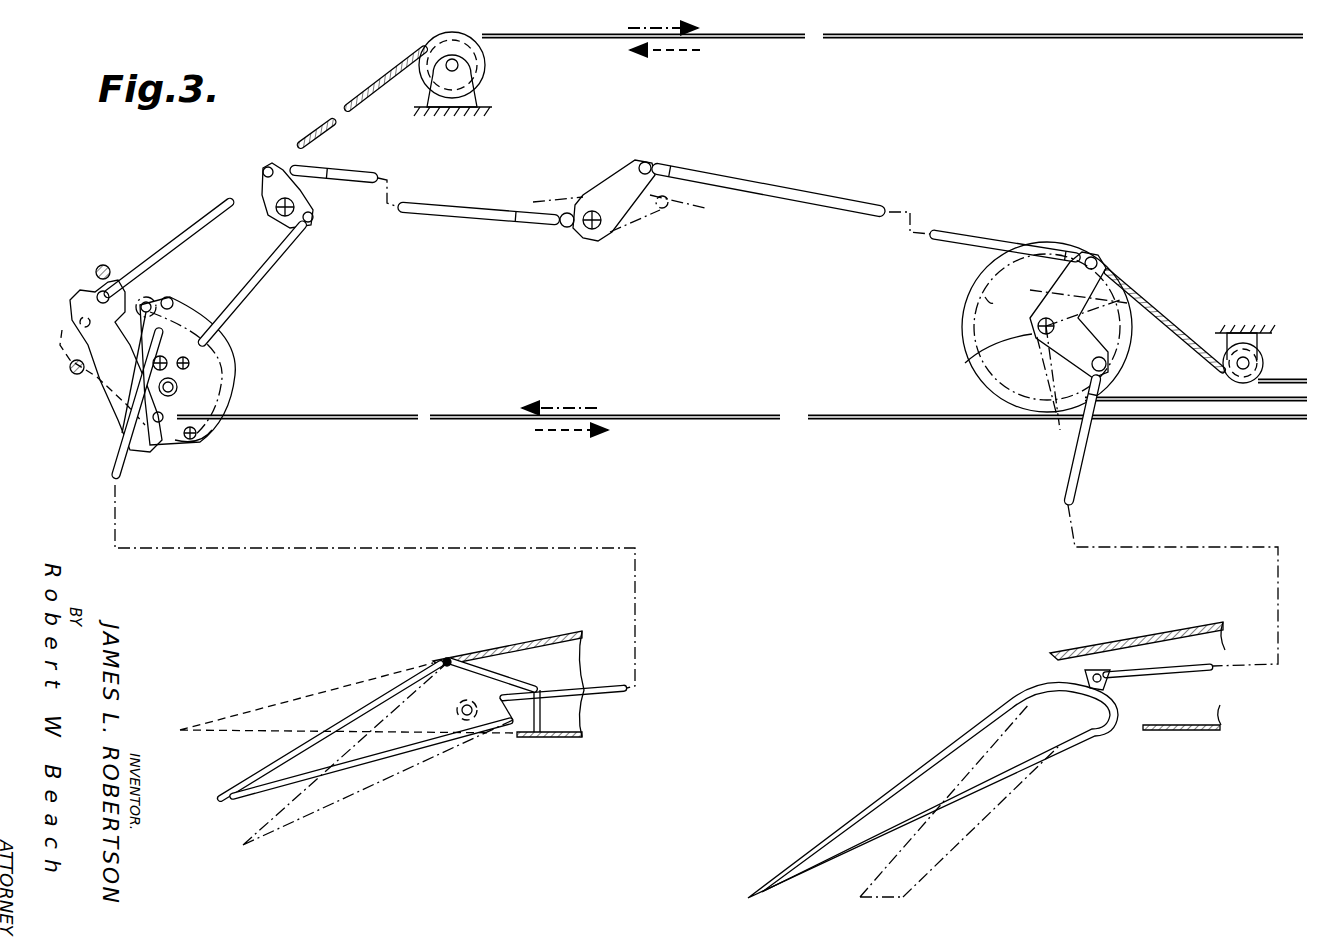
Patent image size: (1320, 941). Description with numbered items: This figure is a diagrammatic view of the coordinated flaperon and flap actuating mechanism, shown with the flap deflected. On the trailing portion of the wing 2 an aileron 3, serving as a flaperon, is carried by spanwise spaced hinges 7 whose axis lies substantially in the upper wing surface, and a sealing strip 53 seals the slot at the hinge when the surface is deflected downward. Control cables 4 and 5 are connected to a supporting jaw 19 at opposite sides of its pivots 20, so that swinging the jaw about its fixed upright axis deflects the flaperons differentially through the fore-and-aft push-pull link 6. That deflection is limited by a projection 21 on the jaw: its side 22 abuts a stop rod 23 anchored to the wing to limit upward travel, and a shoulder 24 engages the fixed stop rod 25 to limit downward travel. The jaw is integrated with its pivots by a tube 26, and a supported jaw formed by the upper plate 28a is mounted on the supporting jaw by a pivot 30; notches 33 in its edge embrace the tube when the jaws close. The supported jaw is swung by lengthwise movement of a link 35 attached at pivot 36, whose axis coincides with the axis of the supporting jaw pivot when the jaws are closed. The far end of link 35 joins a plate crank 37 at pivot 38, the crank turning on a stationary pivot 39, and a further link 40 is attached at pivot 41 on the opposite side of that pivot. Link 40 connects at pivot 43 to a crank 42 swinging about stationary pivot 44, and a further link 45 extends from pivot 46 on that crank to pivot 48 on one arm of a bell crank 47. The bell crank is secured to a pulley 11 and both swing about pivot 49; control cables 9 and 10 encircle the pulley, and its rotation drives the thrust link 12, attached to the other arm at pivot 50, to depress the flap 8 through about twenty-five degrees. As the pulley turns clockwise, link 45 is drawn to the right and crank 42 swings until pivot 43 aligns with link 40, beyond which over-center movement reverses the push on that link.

The wing 2 is at (558, 636).
The aileron 3 is at (408, 753).
The control cable 4 is at (902, 38).
The control cable 5 is at (345, 420).
The push-pull link 6 is at (110, 463).
The hinge 7 is at (454, 658).
The flap 8 is at (1023, 773).
The control cable 9 is at (1185, 337).
The control cable 10 is at (1198, 400).
The pulley 11 is at (968, 308).
The thrust link 12 is at (1085, 440).
The supporting jaw 19 is at (148, 301).
The pivot 20 is at (184, 336).
The projection 21 is at (70, 305).
The side 22 is at (66, 340).
The stop rod 23 is at (70, 370).
The shoulder 24 is at (96, 292).
The stop rod 25 is at (104, 264).
The tube 26 is at (150, 392).
The upper plate 28a is at (238, 397).
The pivot 30 is at (191, 441).
The notch 33 is at (228, 386).
The link 35 is at (266, 292).
The pivot 36 is at (190, 360).
The plate crank 37 is at (307, 193).
The pivot 38 is at (313, 219).
The pivot 39 is at (268, 222).
The link 40 is at (352, 170).
The pivot 41 is at (263, 172).
The crank 42 is at (603, 188).
The pivot 43 is at (565, 230).
The pivot 44 is at (600, 242).
The link 45 is at (776, 182).
The pivot 46 is at (648, 160).
The bell crank 47 is at (1103, 290).
The pivot 48 is at (1089, 256).
The pivot 49 is at (980, 350).
The pivot 50 is at (1107, 366).
The sealing strip 53 is at (442, 658).